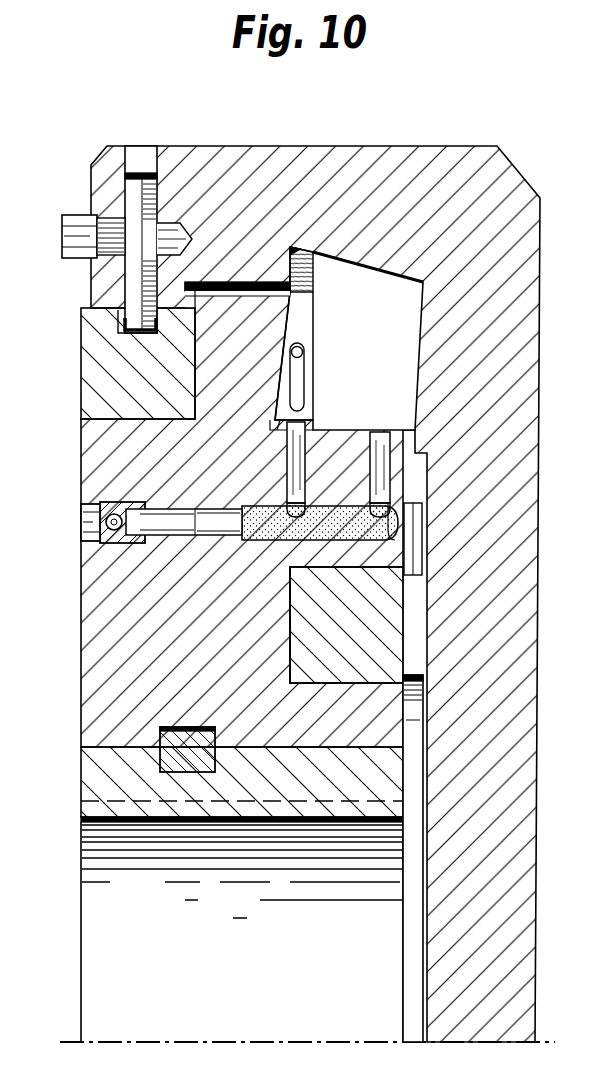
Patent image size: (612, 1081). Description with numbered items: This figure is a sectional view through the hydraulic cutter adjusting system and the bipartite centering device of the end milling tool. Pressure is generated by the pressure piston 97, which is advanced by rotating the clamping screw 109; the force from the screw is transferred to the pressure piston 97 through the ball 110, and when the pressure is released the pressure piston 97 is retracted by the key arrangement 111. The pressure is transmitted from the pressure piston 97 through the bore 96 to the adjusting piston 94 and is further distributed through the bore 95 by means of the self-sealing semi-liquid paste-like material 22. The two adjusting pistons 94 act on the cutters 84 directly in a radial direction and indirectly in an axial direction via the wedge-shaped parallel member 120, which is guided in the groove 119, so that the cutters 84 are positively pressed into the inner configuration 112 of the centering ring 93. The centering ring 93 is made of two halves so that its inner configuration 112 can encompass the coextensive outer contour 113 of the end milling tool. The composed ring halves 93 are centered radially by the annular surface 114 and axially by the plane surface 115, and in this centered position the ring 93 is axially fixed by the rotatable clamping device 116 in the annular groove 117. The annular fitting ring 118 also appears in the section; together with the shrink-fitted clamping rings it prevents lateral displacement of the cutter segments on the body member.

The centering ring 93 is at (371, 160).
The rotatable clamping device 116 is at (130, 196).
The annular surface 114 is at (104, 308).
The annular groove 117 is at (160, 334).
The inner configuration 112 is at (302, 247).
The coextensive outer contour 113 is at (375, 272).
The cutter 84 is at (417, 305).
The groove 119 is at (305, 365).
The wedge-shaped parallel member 120 is at (305, 403).
The adjusting piston 94 is at (378, 448).
The bore 95 is at (305, 478).
The ball 110 is at (105, 506).
The key arrangement 111 is at (142, 508).
The clamping screw 109 is at (81, 537).
The pressure piston 97 is at (208, 545).
The self-sealing semi-liquid paste-like material 22 is at (265, 542).
The bore 96 is at (352, 565).
The plane surface 115 is at (405, 640).
The annular fitting ring 118 is at (180, 727).